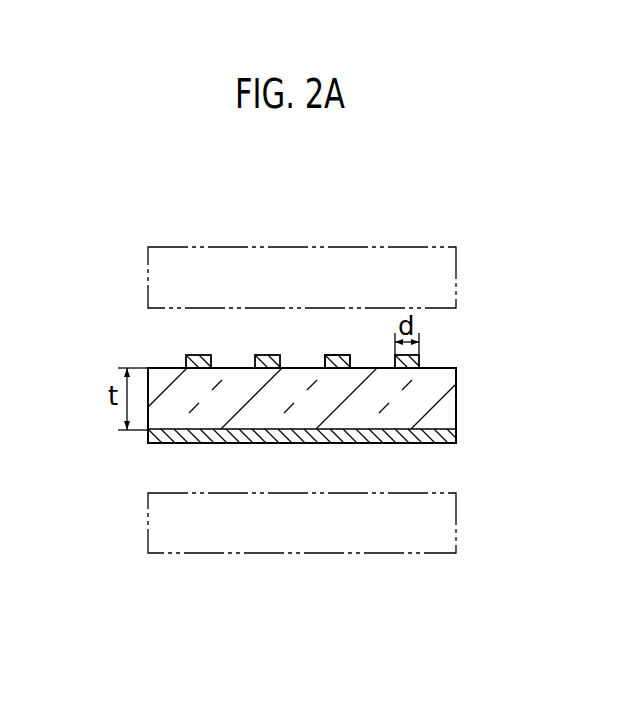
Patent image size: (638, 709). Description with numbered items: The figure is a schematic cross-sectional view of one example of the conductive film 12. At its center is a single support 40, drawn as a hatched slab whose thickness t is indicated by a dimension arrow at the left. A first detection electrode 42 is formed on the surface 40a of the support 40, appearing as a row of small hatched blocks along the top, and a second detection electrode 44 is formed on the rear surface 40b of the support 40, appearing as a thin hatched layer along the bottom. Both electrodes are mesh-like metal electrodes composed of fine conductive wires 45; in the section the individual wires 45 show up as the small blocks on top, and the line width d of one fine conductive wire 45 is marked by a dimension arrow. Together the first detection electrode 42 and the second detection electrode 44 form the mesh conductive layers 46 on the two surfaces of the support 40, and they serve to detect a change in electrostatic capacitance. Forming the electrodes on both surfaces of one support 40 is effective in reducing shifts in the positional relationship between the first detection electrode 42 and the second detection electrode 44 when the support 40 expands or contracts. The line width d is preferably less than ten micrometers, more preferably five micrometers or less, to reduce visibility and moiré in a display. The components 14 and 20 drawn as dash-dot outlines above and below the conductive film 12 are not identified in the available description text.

The conductive film 12 is at (468, 348).
The first member 14 is at (436, 247).
The second member 20 is at (457, 523).
The support 40 is at (457, 398).
The surface 40a is at (158, 367).
The rear surface 40b is at (158, 443).
The first detection electrode 42 is at (192, 355).
The second detection electrode 44 is at (457, 436).
The fine conductive wire 45 is at (336, 355).
The mesh conductive layer 46 is at (218, 348).